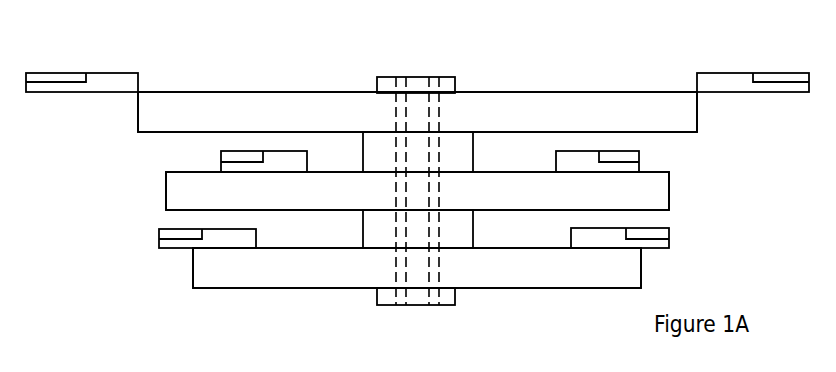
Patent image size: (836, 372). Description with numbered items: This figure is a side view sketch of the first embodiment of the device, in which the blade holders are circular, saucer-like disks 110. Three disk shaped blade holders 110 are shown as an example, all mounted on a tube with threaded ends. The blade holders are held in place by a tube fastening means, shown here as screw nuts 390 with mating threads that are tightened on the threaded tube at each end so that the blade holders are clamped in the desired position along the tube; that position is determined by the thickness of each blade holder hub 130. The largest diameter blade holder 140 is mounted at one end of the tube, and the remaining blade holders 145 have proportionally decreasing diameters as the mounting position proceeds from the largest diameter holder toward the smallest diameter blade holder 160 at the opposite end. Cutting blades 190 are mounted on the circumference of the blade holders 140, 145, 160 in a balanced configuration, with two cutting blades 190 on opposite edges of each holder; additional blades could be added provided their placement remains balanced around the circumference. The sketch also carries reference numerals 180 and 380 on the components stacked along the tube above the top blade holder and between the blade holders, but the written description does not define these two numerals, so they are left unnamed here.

The disk shaped blade holder 110 is at (697, 119).
The blade holder hub 130 is at (475, 157).
The largest diameter blade holder 140 is at (138, 114).
The remaining blade holder 145 is at (166, 190).
The smallest diameter blade holder 160 is at (193, 279).
The top cap 180 is at (450, 77).
The cutting blade 190 is at (75, 72).
The lower spacer block 380 is at (442, 235).
The screw nut 390 is at (445, 307).